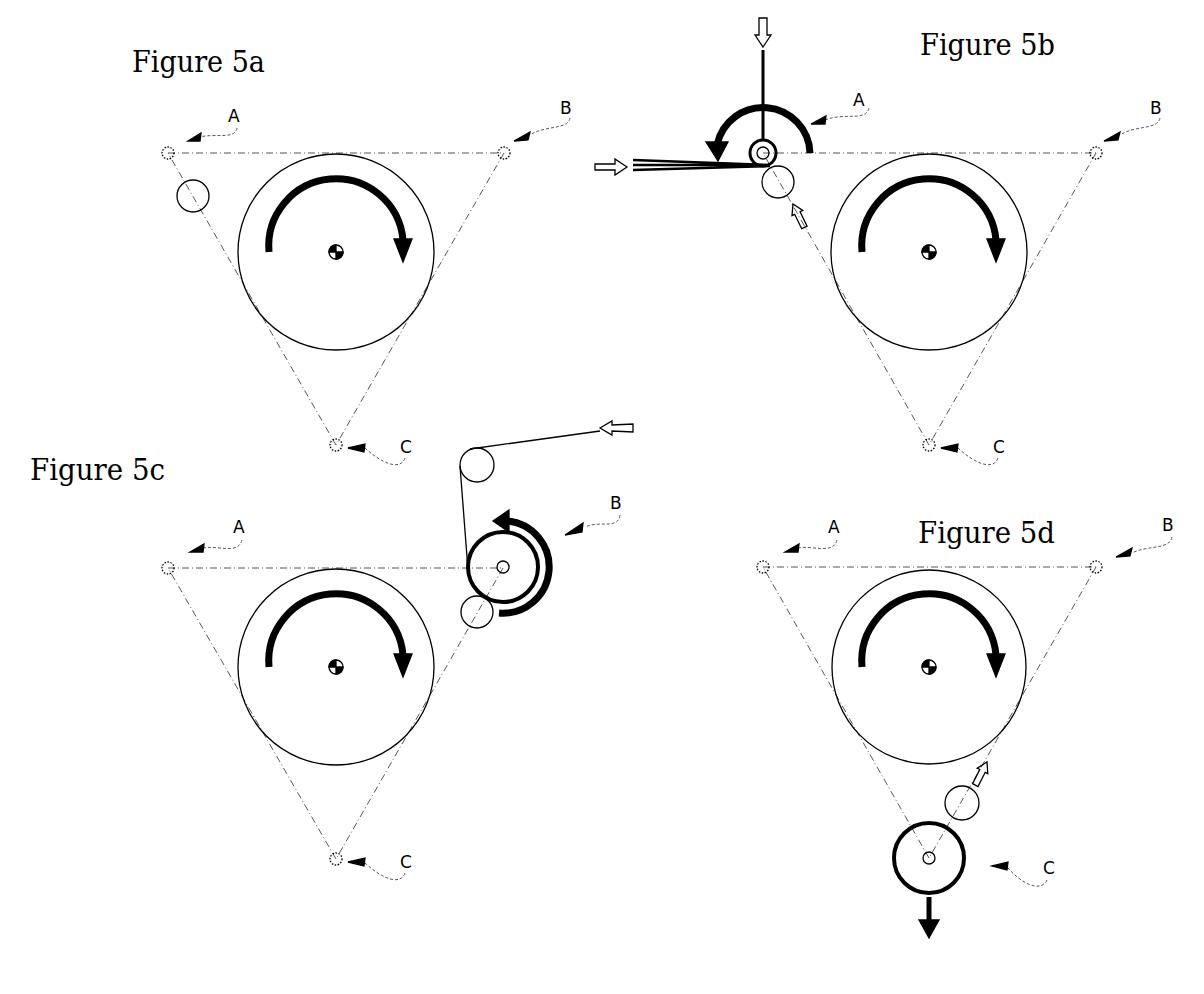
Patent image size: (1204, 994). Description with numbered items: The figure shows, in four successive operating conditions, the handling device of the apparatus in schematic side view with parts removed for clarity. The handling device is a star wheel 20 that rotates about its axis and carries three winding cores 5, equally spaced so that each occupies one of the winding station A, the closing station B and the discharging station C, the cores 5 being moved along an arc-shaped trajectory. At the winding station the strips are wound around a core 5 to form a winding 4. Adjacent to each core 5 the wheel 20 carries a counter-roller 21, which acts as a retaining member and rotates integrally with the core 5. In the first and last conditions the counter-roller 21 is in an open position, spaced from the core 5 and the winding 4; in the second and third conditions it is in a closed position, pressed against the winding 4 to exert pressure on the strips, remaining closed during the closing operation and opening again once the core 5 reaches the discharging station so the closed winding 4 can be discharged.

In FIG. 5B, the winding 4 is at (748, 148).
In FIG. 5C, the winding 4 is at (468, 565).
In FIG. 5D, the winding 4 is at (912, 850).
In FIG. 5A, the winding core 5 is at (162, 153).
In FIG. 5B, the winding core 5 is at (757, 172).
In FIG. 5C, the winding core 5 is at (162, 567).
In FIG. 5D, the winding core 5 is at (757, 567).
In FIG. 5A, the star wheel 20 is at (415, 298).
In FIG. 5B, the star wheel 20 is at (1005, 297).
In FIG. 5C, the star wheel 20 is at (415, 713).
In FIG. 5D, the star wheel 20 is at (990, 700).
In FIG. 5A, the counter-roller 21 is at (196, 206).
In FIG. 5B, the counter-roller 21 is at (777, 200).
In FIG. 5C, the counter-roller 21 is at (483, 627).
In FIG. 5D, the counter-roller 21 is at (973, 810).